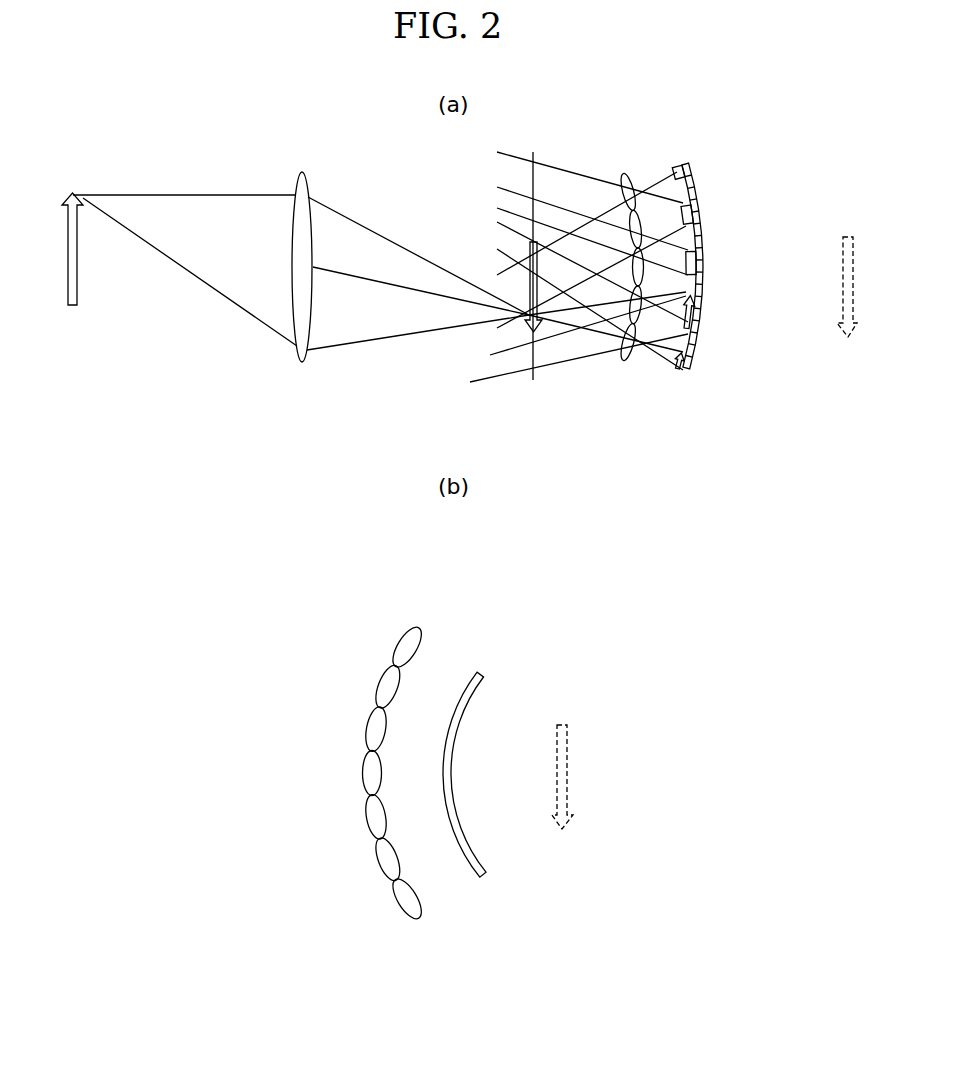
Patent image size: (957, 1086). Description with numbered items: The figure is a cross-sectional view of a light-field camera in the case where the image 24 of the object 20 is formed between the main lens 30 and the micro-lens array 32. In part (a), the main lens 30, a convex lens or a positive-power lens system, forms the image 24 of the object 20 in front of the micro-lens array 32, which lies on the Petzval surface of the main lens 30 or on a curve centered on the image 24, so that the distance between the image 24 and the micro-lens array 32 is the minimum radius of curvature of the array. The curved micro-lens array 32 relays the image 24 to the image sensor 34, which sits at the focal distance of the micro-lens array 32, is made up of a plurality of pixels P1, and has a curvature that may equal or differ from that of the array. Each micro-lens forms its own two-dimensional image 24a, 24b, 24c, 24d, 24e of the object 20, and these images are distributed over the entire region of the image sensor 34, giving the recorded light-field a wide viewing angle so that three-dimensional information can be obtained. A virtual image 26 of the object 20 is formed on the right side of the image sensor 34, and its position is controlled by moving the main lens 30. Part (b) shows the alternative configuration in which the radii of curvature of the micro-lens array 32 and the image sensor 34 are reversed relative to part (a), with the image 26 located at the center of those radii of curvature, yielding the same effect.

The object 20 is at (73, 307).
The main lens 30 is at (300, 363).
The image 24 is at (526, 333).
The micro-lens array 32 is at (629, 173).
The image sensor 34 is at (697, 157).
The pixels P1 is at (696, 181).
The 2-dimensional image 24a is at (677, 366).
The 2-dimensional image 24b is at (697, 317).
The 2-dimensional image 24c is at (697, 258).
The 2-dimensional image 24d is at (692, 212).
The 2-dimensional image 24e is at (678, 165).
The image 26 is at (847, 236).